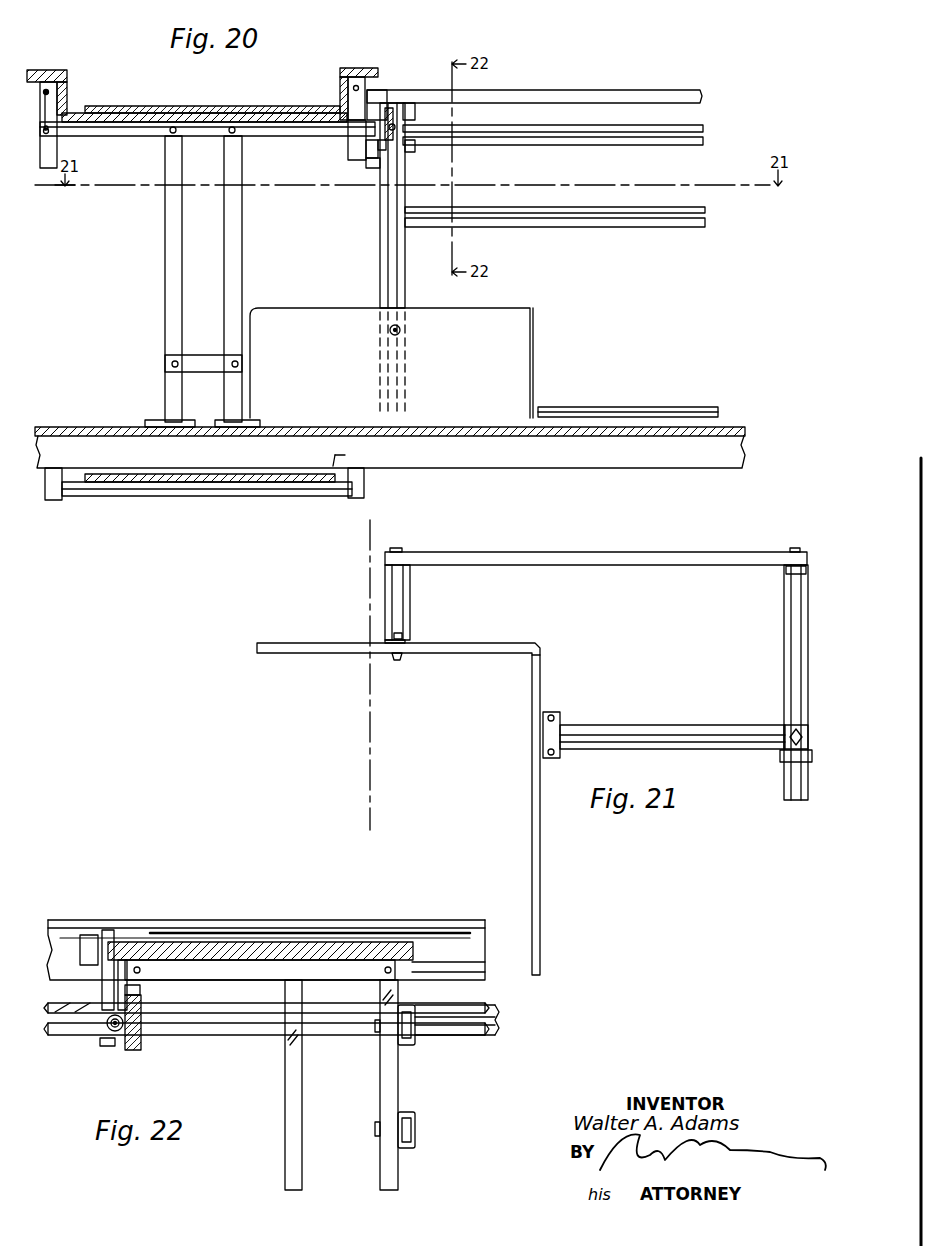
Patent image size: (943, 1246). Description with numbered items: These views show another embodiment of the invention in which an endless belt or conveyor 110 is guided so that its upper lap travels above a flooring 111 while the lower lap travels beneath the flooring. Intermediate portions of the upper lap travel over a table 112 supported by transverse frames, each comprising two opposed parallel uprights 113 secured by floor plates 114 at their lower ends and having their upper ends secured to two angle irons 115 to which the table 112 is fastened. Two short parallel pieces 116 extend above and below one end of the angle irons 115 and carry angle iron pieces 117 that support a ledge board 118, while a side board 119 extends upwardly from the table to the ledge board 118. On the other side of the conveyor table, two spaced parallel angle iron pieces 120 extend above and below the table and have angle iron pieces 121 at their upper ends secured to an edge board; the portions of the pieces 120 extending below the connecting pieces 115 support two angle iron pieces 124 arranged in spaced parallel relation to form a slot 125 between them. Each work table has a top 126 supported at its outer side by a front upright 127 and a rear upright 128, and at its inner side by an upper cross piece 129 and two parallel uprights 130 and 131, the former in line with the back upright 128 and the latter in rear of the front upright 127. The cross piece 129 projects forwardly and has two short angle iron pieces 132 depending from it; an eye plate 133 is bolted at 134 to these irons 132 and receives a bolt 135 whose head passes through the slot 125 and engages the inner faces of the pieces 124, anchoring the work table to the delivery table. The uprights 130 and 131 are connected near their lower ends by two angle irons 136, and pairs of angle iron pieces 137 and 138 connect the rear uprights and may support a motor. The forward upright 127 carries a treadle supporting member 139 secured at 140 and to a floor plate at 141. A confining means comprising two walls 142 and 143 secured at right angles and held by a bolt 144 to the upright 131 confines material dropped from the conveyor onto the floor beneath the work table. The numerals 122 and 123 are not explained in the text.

In FIG. 20, the endless belt or conveyor 110 is at (200, 107).
In FIG. 20, the flooring 111 is at (88, 427).
In FIG. 20, the table 112 is at (115, 107).
In FIG. 20, the uprights 113 is at (242, 274).
In FIG. 20, the floor plates 114 is at (215, 418).
In FIG. 20, the angle irons 115 is at (100, 135).
In FIG. 20, the short parallel pieces 116 is at (72, 205).
In FIG. 20, the angle iron pieces 117 is at (44, 96).
In FIG. 20, the ledge board 118 is at (50, 72).
In FIG. 20, the side board 119 is at (68, 95).
In FIG. 20, the angle iron pieces 120 is at (355, 158).
In FIG. 22, the angle iron pieces 120 is at (88, 940).
In FIG. 20, the angle iron pieces 121 is at (385, 92).
In FIG. 22, the angle iron pieces 121 is at (108, 930).
In FIG. 22, the top rail 122 is at (165, 918).
In FIG. 20, the hatched block 123 is at (340, 75).
In FIG. 20, the angle iron pieces 124 is at (375, 150).
In FIG. 22, the angle iron pieces 124 is at (185, 1030).
In FIG. 22, the slot 125 is at (235, 1025).
In FIG. 20, the top 126 is at (512, 90).
In FIG. 22, the top 126 is at (400, 940).
In FIG. 21, the front upright 127 is at (792, 762).
In FIG. 21, the rear upright 128 is at (806, 568).
In FIG. 20, the cross piece 129 is at (410, 120).
In FIG. 22, the cross piece 129 is at (255, 965).
In FIG. 20, the upright 130 is at (392, 259).
In FIG. 21, the upright 130 is at (418, 552).
In FIG. 22, the upright 130 is at (392, 1082).
In FIG. 21, the upright 131 is at (418, 653).
In FIG. 22, the upright 131 is at (288, 1136).
In FIG. 22, the angle iron pieces 132 is at (132, 1052).
In FIG. 20, the eye plate 133 is at (412, 145).
In FIG. 22, the eye plate 133 is at (142, 993).
In FIG. 20, the bolt 134 is at (392, 108).
In FIG. 20, the bolt 135 is at (372, 165).
In FIG. 22, the bolt 135 is at (108, 1035).
In FIG. 21, the angle irons 136 is at (408, 592).
In FIG. 20, the angle iron pieces 137 is at (665, 225).
In FIG. 21, the angle iron pieces 137 is at (633, 552).
In FIG. 22, the angle iron pieces 137 is at (415, 1140).
In FIG. 20, the angle iron pieces 138 is at (700, 127).
In FIG. 22, the angle iron pieces 138 is at (408, 1046).
In FIG. 21, the treadle supporting member 139 is at (672, 745).
In FIG. 21, the securing point 140 is at (790, 725).
In FIG. 21, the floor plate 141 is at (552, 712).
In FIG. 20, the wall 142 is at (533, 372).
In FIG. 21, the wall 142 is at (540, 858).
In FIG. 20, the wall 143 is at (525, 332).
In FIG. 21, the wall 143 is at (515, 643).
In FIG. 20, the bolt 144 is at (390, 332).
In FIG. 21, the bolt 144 is at (396, 662).